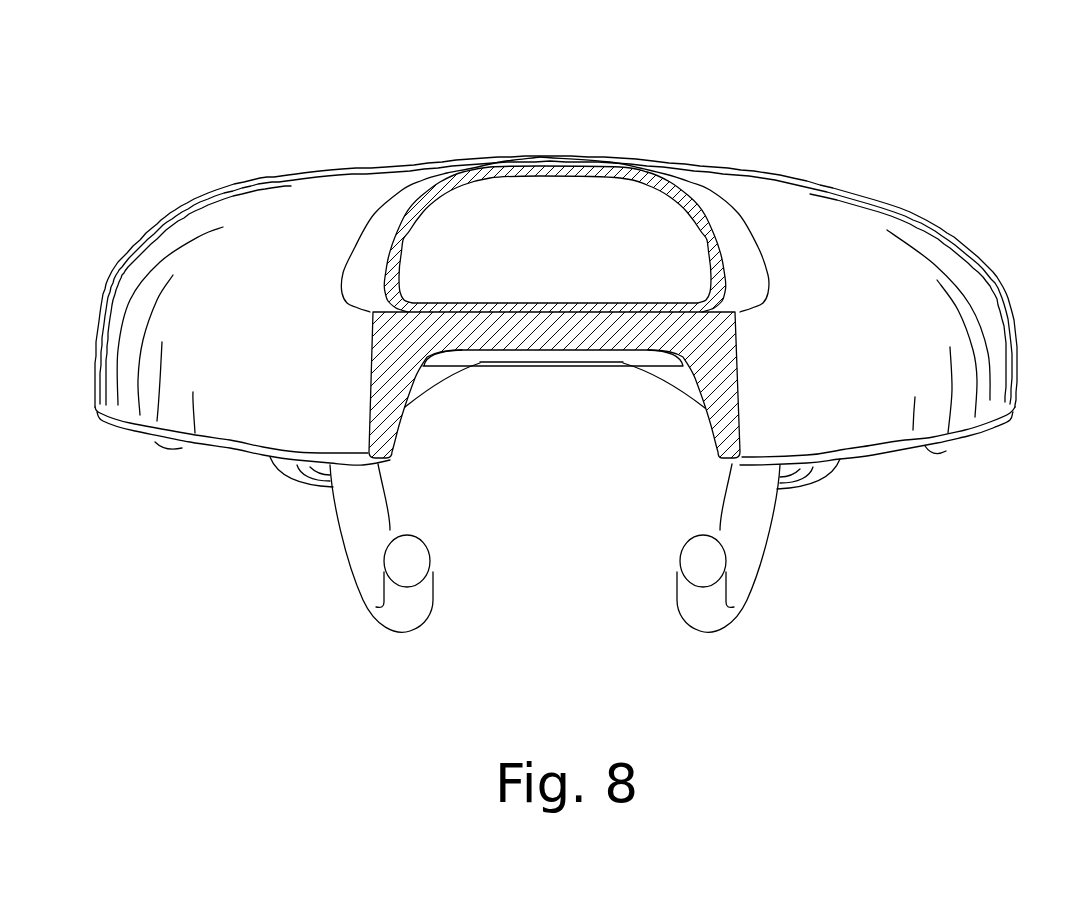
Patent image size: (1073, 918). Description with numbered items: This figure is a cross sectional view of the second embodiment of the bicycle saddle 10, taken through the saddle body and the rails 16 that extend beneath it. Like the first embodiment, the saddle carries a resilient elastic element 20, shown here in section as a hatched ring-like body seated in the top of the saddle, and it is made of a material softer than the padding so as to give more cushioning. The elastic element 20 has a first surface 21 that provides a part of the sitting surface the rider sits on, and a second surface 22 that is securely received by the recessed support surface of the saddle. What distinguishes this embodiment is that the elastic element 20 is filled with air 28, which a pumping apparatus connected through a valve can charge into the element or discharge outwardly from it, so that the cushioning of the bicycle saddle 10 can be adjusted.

The bicycle saddle 10 is at (904, 152).
The rail 16 is at (738, 535).
The elastic element 20 is at (627, 148).
The first surface 21 is at (543, 167).
The second surface 22 is at (556, 313).
The air 28 is at (478, 212).